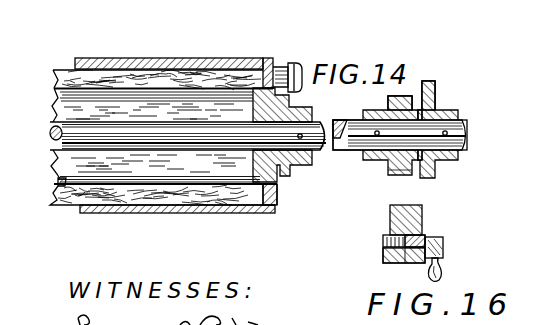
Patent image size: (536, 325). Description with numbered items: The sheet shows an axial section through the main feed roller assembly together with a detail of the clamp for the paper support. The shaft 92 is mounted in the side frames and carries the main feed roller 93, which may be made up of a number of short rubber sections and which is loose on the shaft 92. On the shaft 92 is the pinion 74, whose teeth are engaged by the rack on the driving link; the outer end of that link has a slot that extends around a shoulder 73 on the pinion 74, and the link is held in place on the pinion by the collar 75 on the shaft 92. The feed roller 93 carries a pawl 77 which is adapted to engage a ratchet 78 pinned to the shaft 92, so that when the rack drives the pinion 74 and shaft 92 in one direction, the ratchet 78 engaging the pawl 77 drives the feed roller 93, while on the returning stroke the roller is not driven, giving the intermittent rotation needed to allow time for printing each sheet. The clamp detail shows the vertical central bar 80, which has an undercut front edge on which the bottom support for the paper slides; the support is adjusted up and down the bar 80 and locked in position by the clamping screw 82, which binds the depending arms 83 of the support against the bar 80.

In FIG. 14, the main feed roller 93 is at (245, 57).
In FIG. 14, the pawl 77 is at (283, 63).
In FIG. 14, the ratchet 78 is at (293, 167).
In FIG. 14, the shoulder 73 is at (419, 113).
In FIG. 14, the pinion 74 is at (388, 100).
In FIG. 14, the collar 75 is at (436, 97).
In FIG. 14, the shaft 92 is at (468, 132).
In FIG. 16, the vertical central bar 80 is at (428, 216).
In FIG. 16, the clamping screw 82 is at (444, 247).
In FIG. 16, the depending arms 83 is at (384, 263).